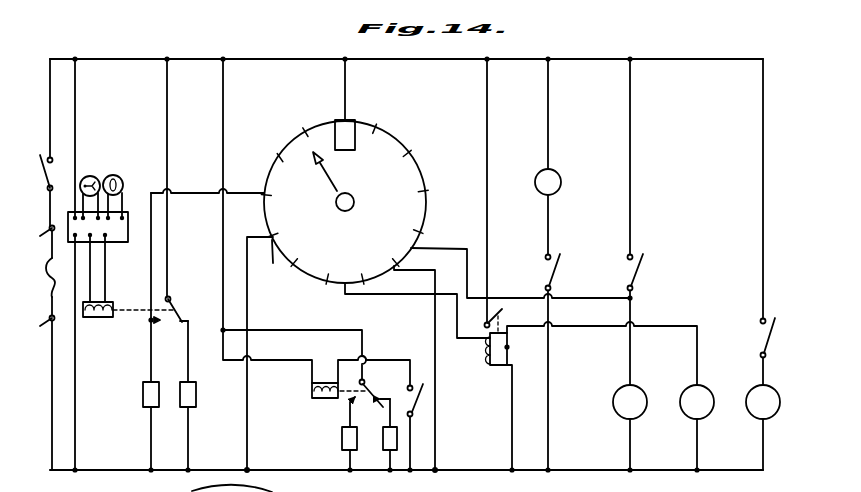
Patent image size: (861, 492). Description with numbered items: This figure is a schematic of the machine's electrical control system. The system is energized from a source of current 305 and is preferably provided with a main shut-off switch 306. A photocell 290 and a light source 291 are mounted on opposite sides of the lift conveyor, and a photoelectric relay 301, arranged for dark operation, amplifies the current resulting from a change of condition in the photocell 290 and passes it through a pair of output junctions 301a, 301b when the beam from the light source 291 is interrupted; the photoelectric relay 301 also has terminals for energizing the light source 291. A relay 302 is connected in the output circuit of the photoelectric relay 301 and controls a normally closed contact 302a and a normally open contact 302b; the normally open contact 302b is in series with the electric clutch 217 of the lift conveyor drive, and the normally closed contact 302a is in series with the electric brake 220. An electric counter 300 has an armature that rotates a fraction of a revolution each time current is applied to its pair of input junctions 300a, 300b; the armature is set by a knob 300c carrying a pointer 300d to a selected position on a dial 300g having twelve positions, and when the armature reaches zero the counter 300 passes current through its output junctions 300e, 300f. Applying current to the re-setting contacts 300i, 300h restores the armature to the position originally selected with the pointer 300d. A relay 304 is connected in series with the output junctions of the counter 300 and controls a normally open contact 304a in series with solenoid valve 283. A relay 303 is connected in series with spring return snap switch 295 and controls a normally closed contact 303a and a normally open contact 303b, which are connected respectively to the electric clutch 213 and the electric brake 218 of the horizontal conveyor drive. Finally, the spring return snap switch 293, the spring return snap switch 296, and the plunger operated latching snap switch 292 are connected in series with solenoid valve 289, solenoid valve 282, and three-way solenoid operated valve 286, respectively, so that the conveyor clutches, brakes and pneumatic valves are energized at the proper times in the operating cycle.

The main shut-off switch 306 is at (37, 172).
The output junction 301a is at (29, 348).
The source of current 305 is at (47, 288).
The photoelectric relay 301 is at (126, 212).
The output junction 301b is at (110, 235).
The photocell 290 is at (88, 177).
The light source 291 is at (124, 166).
The relay 302 is at (104, 318).
The normally closed contact 302a is at (176, 314).
The normally open contact 302b is at (154, 326).
The electric clutch 217 is at (145, 396).
The electric brake 220 is at (189, 395).
The electric counter 300 is at (372, 168).
The input junction 300a is at (264, 192).
The input junction 300b is at (273, 263).
The knob 300c is at (346, 211).
The pointer 300d is at (332, 182).
The output junction 300e is at (338, 120).
The dial 300g is at (368, 128).
The output junction 300f is at (340, 285).
The re-setting contact 300h is at (394, 294).
The re-setting contact 300i is at (413, 247).
The relay 303 is at (312, 392).
The normally closed contact 303a is at (323, 412).
The normally open contact 303b is at (377, 403).
The electric clutch 213 is at (342, 441).
The electric brake 218 is at (397, 438).
The spring return snap switch 295 is at (424, 402).
The relay 304 is at (507, 347).
The normally open contact 304a is at (508, 316).
The solenoid valve 289 is at (556, 177).
The spring return snap switch 293 is at (560, 263).
The spring return snap switch 296 is at (640, 268).
The solenoid valve 282 is at (620, 395).
The solenoid valve 283 is at (686, 395).
The plunger operated latching snap switch 292 is at (768, 339).
The three-way solenoid operated valve 286 is at (752, 395).